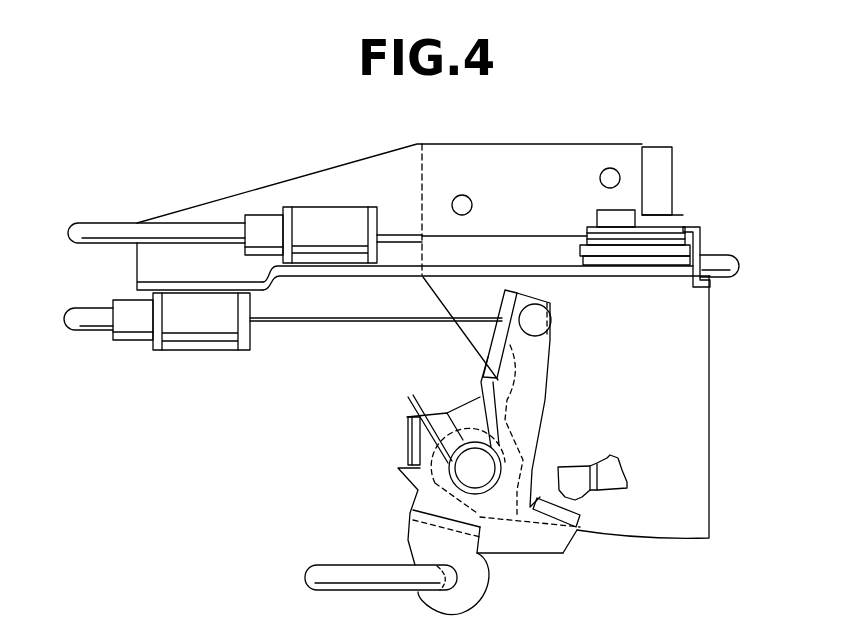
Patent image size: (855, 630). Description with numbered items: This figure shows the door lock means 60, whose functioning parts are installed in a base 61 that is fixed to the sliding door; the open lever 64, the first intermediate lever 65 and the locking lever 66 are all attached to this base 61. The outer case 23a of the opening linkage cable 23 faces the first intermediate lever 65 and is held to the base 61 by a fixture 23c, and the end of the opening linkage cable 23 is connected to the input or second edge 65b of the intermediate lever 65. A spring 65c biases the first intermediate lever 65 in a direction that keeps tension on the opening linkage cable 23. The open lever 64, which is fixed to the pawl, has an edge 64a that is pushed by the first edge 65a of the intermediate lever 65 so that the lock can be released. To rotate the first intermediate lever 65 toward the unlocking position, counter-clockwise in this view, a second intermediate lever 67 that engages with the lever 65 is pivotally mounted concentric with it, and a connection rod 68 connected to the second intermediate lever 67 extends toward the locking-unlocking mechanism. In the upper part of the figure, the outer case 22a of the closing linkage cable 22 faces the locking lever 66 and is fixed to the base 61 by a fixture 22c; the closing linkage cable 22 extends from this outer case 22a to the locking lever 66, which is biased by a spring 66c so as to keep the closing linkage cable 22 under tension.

The closing linkage cable 22 is at (507, 237).
The outer case of closing linkage cable 22a is at (192, 227).
The fixture 22c is at (342, 212).
The opening linkage cable 23 is at (323, 322).
The outer case of opening linkage cable 23a is at (87, 333).
The fixture 23c is at (212, 330).
The door lock means 60 is at (297, 503).
The base 61 is at (330, 276).
The open lever 64 is at (583, 465).
The edge of open lever 64a is at (583, 499).
The first intermediate lever 65 is at (538, 385).
The first edge of intermediate lever 65a is at (570, 545).
The second edge of intermediate lever 65b is at (532, 296).
The spring 65c is at (408, 443).
The locking lever 66 is at (727, 255).
The spring 66c is at (592, 227).
The second intermediate lever 67 is at (412, 495).
The connection rod 68 is at (362, 580).